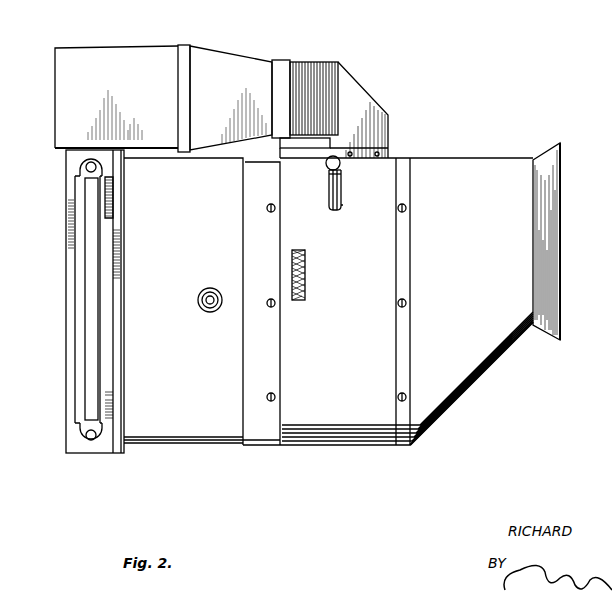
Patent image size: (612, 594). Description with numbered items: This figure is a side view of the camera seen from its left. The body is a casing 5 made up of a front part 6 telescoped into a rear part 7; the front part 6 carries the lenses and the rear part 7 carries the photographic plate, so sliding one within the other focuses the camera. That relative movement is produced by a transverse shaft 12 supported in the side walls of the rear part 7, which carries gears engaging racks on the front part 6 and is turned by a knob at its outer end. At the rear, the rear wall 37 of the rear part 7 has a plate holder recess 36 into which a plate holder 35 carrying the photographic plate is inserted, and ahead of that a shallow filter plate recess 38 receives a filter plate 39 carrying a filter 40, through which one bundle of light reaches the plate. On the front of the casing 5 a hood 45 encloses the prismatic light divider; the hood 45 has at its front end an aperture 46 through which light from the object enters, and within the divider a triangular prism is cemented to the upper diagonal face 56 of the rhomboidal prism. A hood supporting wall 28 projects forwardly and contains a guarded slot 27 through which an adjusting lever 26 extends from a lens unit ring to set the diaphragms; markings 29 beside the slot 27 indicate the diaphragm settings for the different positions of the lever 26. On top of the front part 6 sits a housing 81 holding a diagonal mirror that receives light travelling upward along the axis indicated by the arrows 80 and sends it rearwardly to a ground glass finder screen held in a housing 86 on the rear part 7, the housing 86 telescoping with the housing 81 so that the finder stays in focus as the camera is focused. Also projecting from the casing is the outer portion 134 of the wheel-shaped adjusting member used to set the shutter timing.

The casing 5 is at (307, 460).
The front part 6 is at (264, 428).
The rear part 7 is at (171, 435).
The transverse shaft 12 is at (200, 306).
The adjusting lever 26 is at (338, 156).
The guarded slot 27 is at (343, 212).
The hood supporting wall 28 is at (348, 430).
The markings 29 is at (355, 158).
The plate holder 35 is at (92, 211).
The plate holder recess 36 is at (78, 376).
The rear wall 37 is at (70, 301).
The filter plate recess 38 is at (112, 193).
The filter plate 39 is at (112, 284).
The filter 40 is at (344, 200).
The hood 45 is at (465, 388).
The aperture 46 is at (555, 215).
The upper diagonal face 56 is at (343, 178).
The arrows 80 is at (343, 167).
The housing 81 is at (352, 90).
The housing 86 is at (133, 55).
The outer portion 134 is at (306, 288).